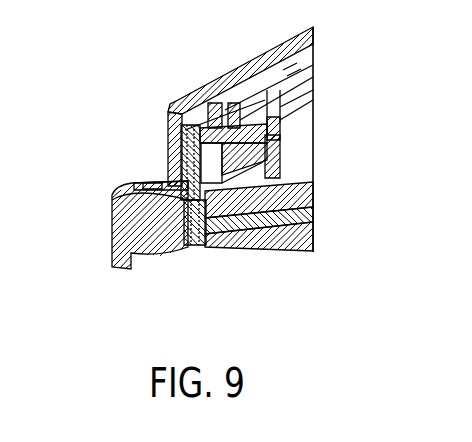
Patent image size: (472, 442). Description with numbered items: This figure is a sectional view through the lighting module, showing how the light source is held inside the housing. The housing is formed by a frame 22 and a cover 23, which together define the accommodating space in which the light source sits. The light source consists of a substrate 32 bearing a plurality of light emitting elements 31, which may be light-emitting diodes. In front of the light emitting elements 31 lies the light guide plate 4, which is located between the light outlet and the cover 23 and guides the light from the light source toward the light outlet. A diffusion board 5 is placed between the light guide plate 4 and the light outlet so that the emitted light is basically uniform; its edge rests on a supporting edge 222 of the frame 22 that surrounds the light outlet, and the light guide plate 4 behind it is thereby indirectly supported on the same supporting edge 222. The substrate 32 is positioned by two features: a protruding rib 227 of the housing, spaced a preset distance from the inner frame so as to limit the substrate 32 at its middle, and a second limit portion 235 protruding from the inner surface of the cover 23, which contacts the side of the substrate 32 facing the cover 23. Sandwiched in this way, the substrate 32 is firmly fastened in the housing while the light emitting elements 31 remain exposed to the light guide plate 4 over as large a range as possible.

The cover 23 is at (167, 115).
The second limit portion 235 is at (199, 163).
The substrate 32 is at (184, 183).
The frame 22 is at (118, 217).
The light emitting elements 31 is at (232, 173).
The light guide plate 4 is at (300, 217).
The diffusion board 5 is at (316, 240).
The protruding rib 227 is at (194, 224).
The supporting edge 222 is at (224, 243).